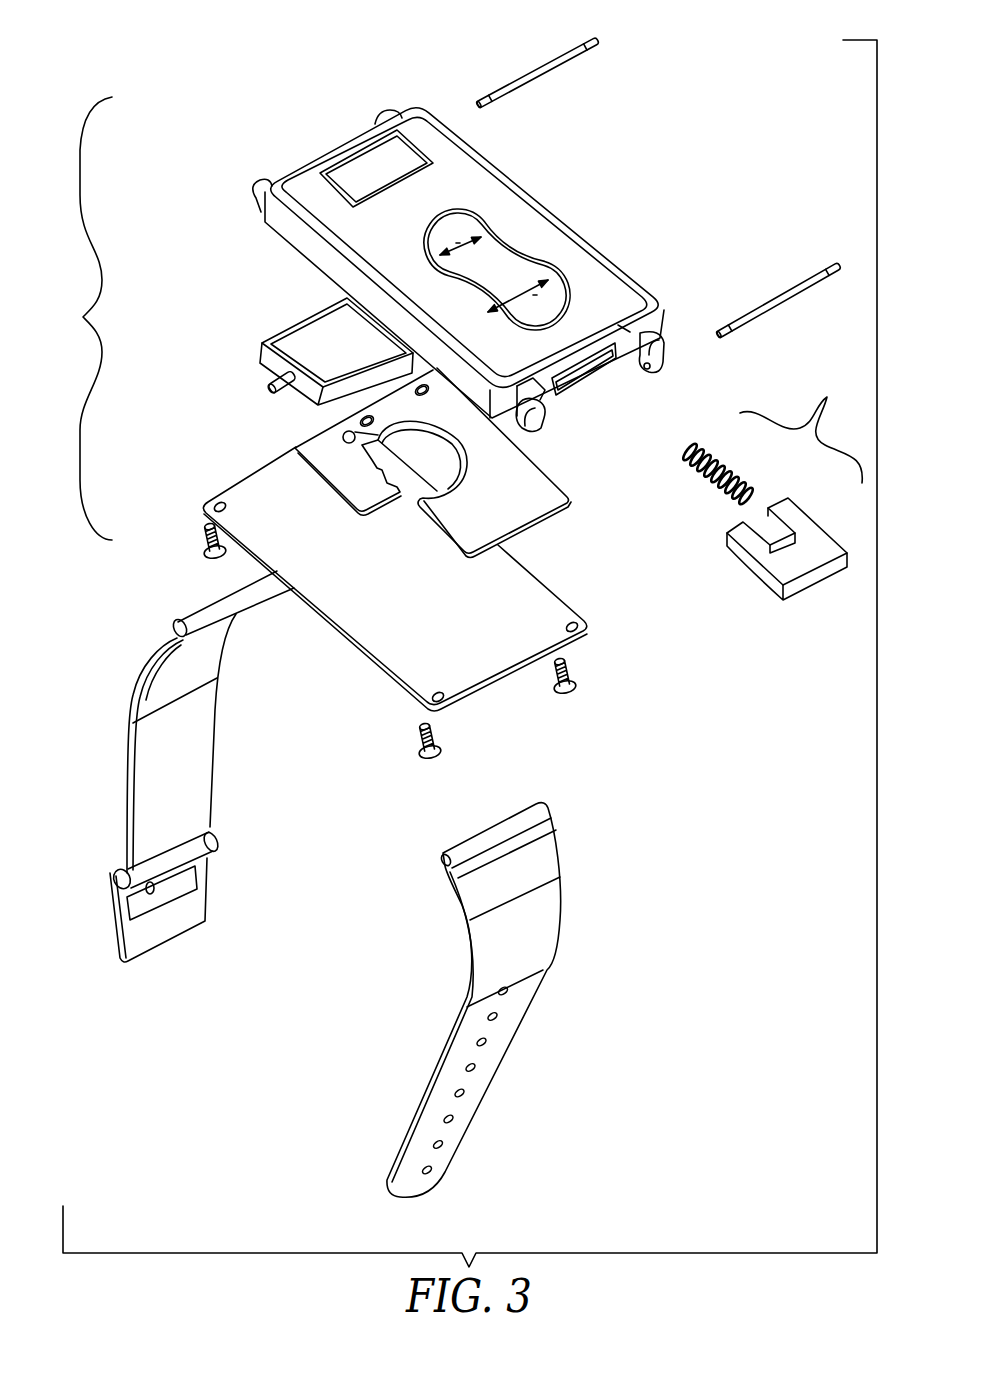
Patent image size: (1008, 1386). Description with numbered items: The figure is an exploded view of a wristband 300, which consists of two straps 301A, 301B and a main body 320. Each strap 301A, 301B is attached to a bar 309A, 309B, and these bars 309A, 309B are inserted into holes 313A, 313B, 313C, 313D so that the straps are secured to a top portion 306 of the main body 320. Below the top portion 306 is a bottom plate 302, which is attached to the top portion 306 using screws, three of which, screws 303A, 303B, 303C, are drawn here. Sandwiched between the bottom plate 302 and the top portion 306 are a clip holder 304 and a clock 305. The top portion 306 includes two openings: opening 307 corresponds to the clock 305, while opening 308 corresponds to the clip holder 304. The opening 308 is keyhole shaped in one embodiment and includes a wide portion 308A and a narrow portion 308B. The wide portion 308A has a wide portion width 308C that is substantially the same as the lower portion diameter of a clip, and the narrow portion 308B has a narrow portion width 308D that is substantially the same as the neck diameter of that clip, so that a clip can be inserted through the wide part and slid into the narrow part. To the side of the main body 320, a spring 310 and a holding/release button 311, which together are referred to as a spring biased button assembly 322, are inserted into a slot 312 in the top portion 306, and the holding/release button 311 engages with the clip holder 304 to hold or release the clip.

The wristband 300 is at (268, 1030).
The strap 301A is at (539, 1013).
The strap 301B is at (217, 787).
The bottom plate 302 is at (258, 476).
The screw 303A is at (419, 737).
The screw 303B is at (577, 672).
The screw 303C is at (207, 541).
The clip holder 304 is at (533, 532).
The clock 305 is at (294, 322).
The top portion 306 is at (314, 157).
The opening 307 is at (395, 166).
The opening 308 is at (483, 243).
The wide portion 308A is at (548, 283).
The narrow portion 308B is at (480, 233).
The wide portion width 308C is at (552, 300).
The narrow portion width 308D is at (458, 238).
The bar 309A is at (547, 60).
The bar 309B is at (792, 287).
The spring 310 is at (714, 460).
The holding/release button 311 is at (817, 523).
The slot 312 is at (583, 369).
The hole 313A is at (650, 373).
The hole 313B is at (546, 422).
The hole 313C is at (382, 115).
The hole 313D is at (254, 181).
The main body 320 is at (84, 316).
The spring biased button assembly 322 is at (801, 422).